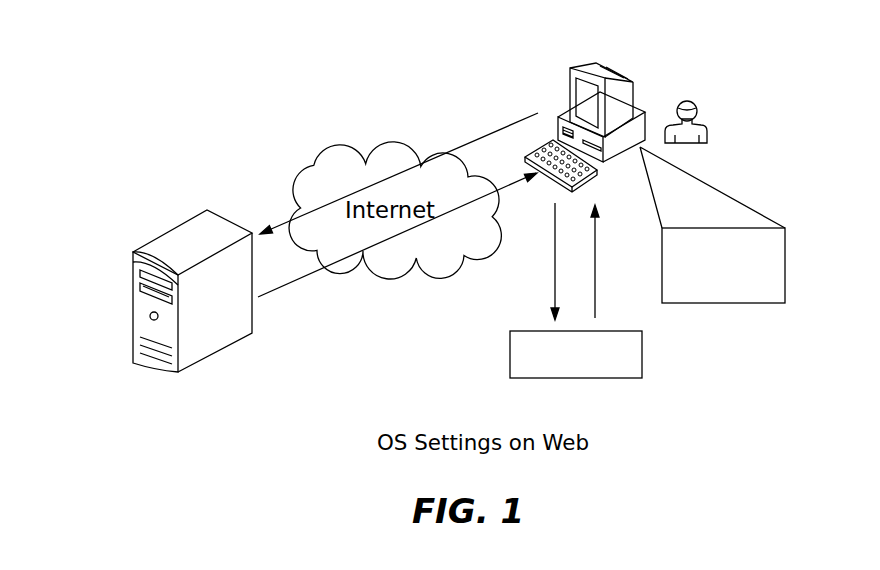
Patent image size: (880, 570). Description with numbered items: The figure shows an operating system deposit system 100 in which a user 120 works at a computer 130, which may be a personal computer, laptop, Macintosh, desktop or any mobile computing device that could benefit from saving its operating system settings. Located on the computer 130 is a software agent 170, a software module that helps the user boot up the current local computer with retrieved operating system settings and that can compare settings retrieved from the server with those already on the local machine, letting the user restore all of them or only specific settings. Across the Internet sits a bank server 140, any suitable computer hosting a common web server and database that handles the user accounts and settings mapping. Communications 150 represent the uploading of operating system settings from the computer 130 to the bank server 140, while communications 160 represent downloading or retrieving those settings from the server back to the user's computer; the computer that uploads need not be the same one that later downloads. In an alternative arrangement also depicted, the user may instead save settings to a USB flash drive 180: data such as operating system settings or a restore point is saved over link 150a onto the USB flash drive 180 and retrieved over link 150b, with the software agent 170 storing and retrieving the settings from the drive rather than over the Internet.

The operating system deposit system 100 is at (246, 108).
The user 120 is at (705, 130).
The computer 130 is at (633, 83).
The bank server 140 is at (205, 358).
The communications 150 is at (488, 132).
The link 150a is at (553, 268).
The link 150b is at (597, 302).
The communications 160 is at (288, 285).
The software agent 170 is at (753, 304).
The USB flash drive 180 is at (510, 350).